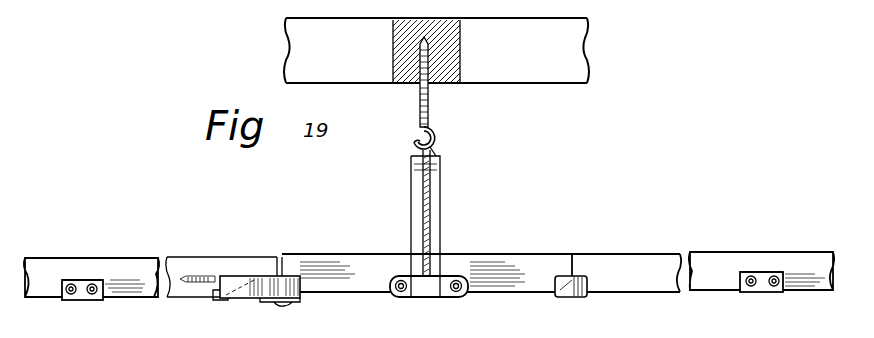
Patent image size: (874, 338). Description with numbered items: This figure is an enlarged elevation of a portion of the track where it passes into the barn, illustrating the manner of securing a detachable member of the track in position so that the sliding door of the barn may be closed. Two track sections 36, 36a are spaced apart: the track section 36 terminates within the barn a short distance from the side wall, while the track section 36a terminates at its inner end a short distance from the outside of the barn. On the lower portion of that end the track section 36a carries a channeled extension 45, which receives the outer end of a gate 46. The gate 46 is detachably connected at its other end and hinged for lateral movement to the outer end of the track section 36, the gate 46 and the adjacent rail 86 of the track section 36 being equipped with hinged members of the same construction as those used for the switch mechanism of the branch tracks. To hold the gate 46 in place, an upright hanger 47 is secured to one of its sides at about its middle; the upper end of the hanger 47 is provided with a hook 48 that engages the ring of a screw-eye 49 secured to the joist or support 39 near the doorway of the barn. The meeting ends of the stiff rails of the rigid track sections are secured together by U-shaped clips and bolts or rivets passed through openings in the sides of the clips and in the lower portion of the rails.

The joist or support 39 is at (436, 50).
The screw-eye 49 is at (429, 104).
The hook 48 is at (442, 146).
The upright hanger 47 is at (411, 204).
The gate 46 is at (489, 258).
The track section 36 is at (174, 257).
The track section 36a is at (608, 256).
The rail 86 is at (240, 258).
The channeled extension 45 is at (559, 292).